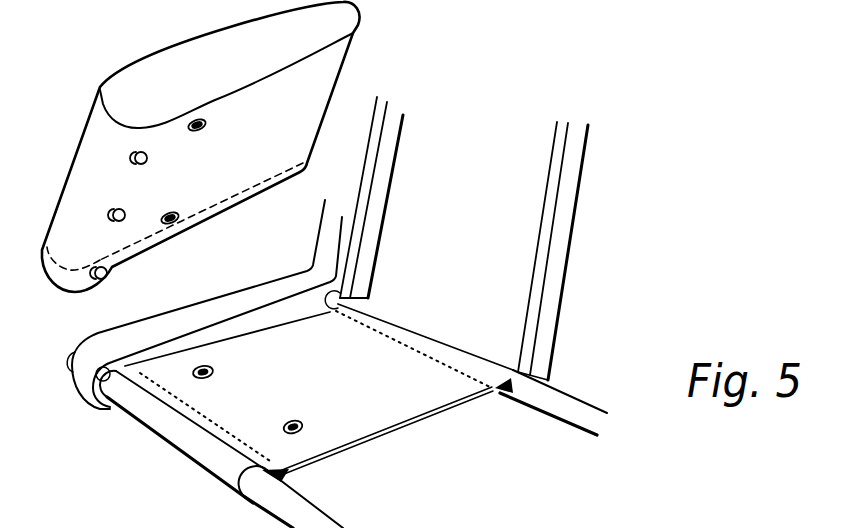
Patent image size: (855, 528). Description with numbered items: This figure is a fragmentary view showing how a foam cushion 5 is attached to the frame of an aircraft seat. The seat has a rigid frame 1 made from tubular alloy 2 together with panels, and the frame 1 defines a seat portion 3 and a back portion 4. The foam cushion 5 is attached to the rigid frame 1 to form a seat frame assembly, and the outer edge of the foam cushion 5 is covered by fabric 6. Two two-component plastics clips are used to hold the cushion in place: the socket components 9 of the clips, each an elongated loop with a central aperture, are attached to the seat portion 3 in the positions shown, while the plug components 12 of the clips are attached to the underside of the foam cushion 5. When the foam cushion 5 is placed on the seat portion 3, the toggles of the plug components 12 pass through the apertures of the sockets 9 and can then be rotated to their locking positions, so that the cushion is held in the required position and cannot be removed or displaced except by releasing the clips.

The rigid frame 1 is at (584, 232).
The tubular alloy 2 is at (563, 403).
The seat portion 3 is at (318, 384).
The back portion 4 is at (466, 225).
The foam cushion 5 is at (194, 66).
The fabric 6 is at (54, 274).
The socket component of clip 9 is at (293, 420).
The plug component of clip 12 is at (96, 270).